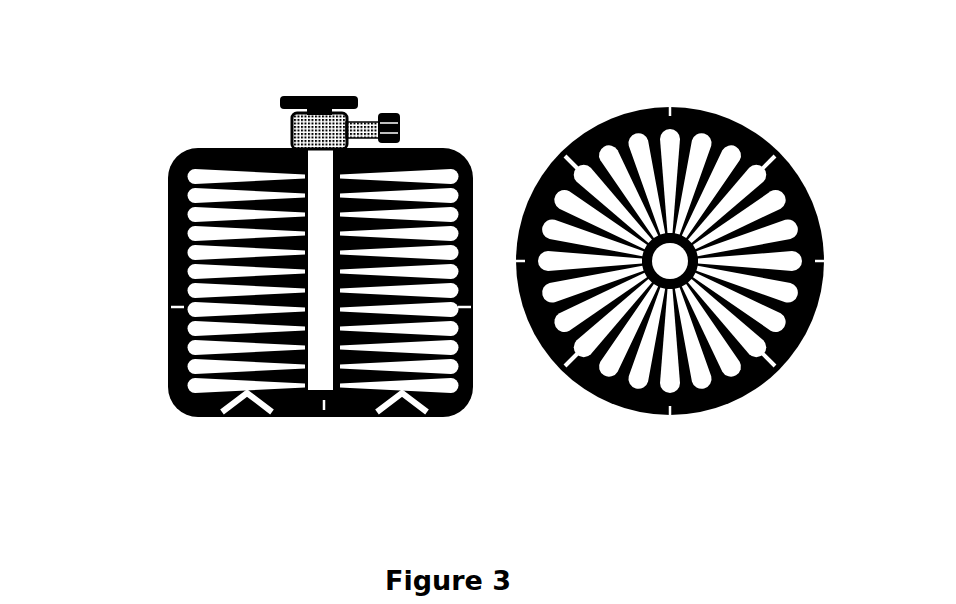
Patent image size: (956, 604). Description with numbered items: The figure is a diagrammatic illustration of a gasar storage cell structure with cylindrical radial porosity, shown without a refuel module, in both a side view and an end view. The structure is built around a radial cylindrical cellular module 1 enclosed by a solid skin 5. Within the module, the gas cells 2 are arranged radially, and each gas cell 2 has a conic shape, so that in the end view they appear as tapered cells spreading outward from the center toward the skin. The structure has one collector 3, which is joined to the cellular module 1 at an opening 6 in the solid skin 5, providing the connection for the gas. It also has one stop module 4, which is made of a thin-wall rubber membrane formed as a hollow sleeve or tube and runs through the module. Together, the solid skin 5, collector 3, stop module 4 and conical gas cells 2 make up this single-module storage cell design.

The radial cylindrical cellular module 1 is at (193, 145).
The gas cell 2 is at (712, 408).
The collector 3 is at (325, 140).
The stop module 4 is at (640, 228).
The solid skin 5 is at (765, 366).
The opening 6 is at (330, 160).